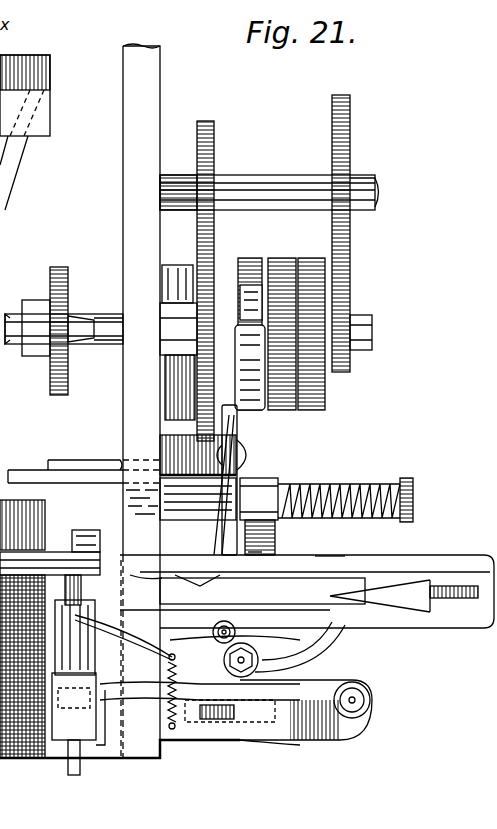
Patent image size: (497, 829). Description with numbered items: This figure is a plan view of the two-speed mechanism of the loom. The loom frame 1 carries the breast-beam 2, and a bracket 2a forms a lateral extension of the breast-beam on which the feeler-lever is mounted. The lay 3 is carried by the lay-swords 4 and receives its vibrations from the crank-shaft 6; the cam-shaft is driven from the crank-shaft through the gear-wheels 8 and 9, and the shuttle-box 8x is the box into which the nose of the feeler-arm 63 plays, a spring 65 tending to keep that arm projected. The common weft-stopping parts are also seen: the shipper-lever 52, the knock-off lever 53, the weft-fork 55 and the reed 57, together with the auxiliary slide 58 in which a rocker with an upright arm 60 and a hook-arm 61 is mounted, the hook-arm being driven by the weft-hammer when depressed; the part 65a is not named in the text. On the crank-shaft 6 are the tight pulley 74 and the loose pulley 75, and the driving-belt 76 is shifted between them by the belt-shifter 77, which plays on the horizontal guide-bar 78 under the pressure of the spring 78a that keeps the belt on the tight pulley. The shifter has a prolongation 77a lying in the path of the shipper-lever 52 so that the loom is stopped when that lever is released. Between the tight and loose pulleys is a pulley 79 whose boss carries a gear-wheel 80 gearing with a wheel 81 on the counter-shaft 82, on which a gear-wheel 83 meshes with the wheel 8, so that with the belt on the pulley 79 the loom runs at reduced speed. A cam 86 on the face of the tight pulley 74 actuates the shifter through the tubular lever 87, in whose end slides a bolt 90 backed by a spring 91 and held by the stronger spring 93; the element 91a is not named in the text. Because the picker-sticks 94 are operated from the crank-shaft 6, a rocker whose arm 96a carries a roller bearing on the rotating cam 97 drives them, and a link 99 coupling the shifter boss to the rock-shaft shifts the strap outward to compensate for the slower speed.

The frame 1 is at (141, 401).
The breast-beam 2 is at (123, 761).
The bracket 2a is at (299, 745).
The lay 3 is at (457, 557).
The lay-swords 4 is at (89, 530).
The crank-shaft 6 is at (115, 312).
The gear-wheel 8 is at (193, 256).
The guide 8x is at (334, 565).
The gear-wheel 9 is at (205, 121).
The shipper-lever 52 is at (209, 702).
The knock-off lever 53 is at (306, 708).
The weft-fork 55 is at (82, 586).
The reed 57 is at (48, 550).
The auxiliary slide 58 is at (74, 706).
The upright arm 60 is at (65, 588).
The hook-arm 61 is at (85, 645).
The feeler-arm 63 is at (339, 648).
The spring 65 is at (165, 712).
The spring rod 65a is at (68, 771).
The tight pulley 74 is at (244, 258).
The loose pulley 75 is at (312, 258).
The driving-belt 76 is at (242, 302).
The belt-shifter 77 is at (268, 448).
The prolongation 77a is at (222, 735).
The guide-bar 78 is at (351, 482).
The spring 78a is at (404, 522).
The pulley 79 is at (282, 258).
The gear-wheel 80 is at (352, 360).
The wheel 81 is at (350, 162).
The counter-shaft 82 is at (266, 190).
The gear-wheel 83 is at (214, 174).
The cam 86 is at (200, 382).
The lever 87 is at (275, 535).
The sliding bolt 90 is at (228, 418).
The spring 91 is at (259, 499).
The plunger guide 91a is at (149, 582).
The spring 93 is at (209, 579).
The picker-sticks 94 is at (10, 242).
The arm 96a is at (94, 342).
The cam 97 is at (59, 395).
The link 99 is at (257, 563).